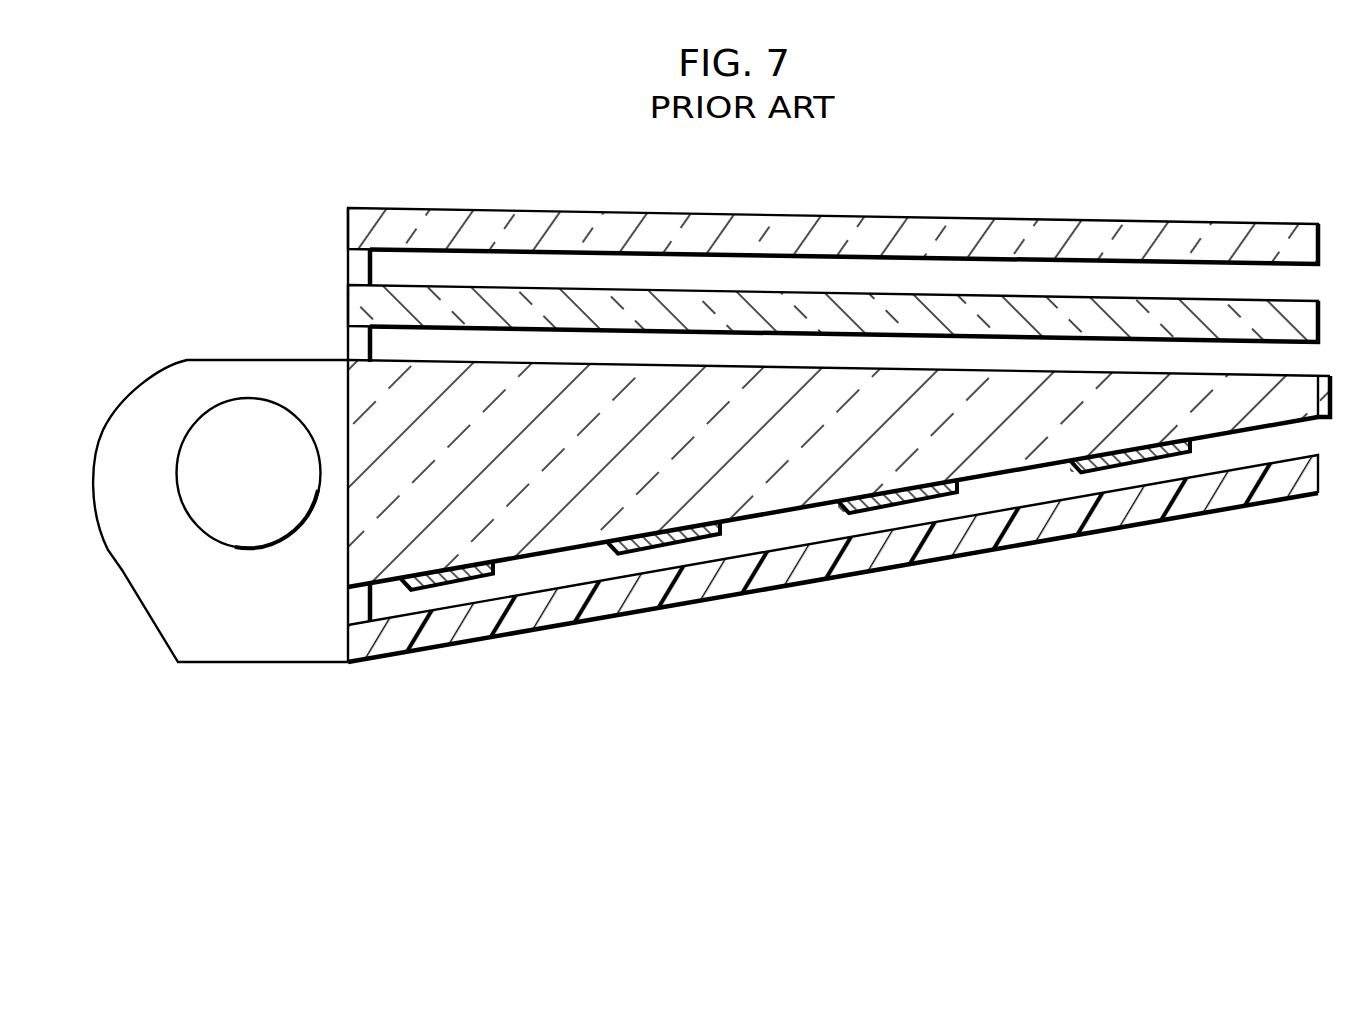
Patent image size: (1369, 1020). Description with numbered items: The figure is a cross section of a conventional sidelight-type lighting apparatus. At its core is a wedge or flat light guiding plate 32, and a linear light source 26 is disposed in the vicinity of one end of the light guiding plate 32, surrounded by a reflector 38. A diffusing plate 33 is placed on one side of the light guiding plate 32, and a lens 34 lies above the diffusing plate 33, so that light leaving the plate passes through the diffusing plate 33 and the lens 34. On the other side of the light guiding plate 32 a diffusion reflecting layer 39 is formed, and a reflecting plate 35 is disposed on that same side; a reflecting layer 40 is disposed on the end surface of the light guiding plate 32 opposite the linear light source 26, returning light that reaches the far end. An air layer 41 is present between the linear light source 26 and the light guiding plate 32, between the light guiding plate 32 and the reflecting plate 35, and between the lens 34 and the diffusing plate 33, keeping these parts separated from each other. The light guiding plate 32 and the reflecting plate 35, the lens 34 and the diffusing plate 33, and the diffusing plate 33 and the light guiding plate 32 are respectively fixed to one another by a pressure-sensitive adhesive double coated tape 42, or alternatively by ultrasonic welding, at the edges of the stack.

The linear light source 26 is at (235, 525).
The light guiding plate 32 is at (557, 543).
The diffusing plate 33 is at (683, 297).
The lens 34 is at (527, 211).
The reflecting plate 35 is at (978, 537).
The reflector 38 is at (146, 375).
The diffusion reflecting layer 39 is at (455, 562).
The reflecting layer 40 is at (1318, 407).
The air layer 41 is at (776, 276).
The pressure-sensitive adhesive double coated tape 42 is at (347, 268).